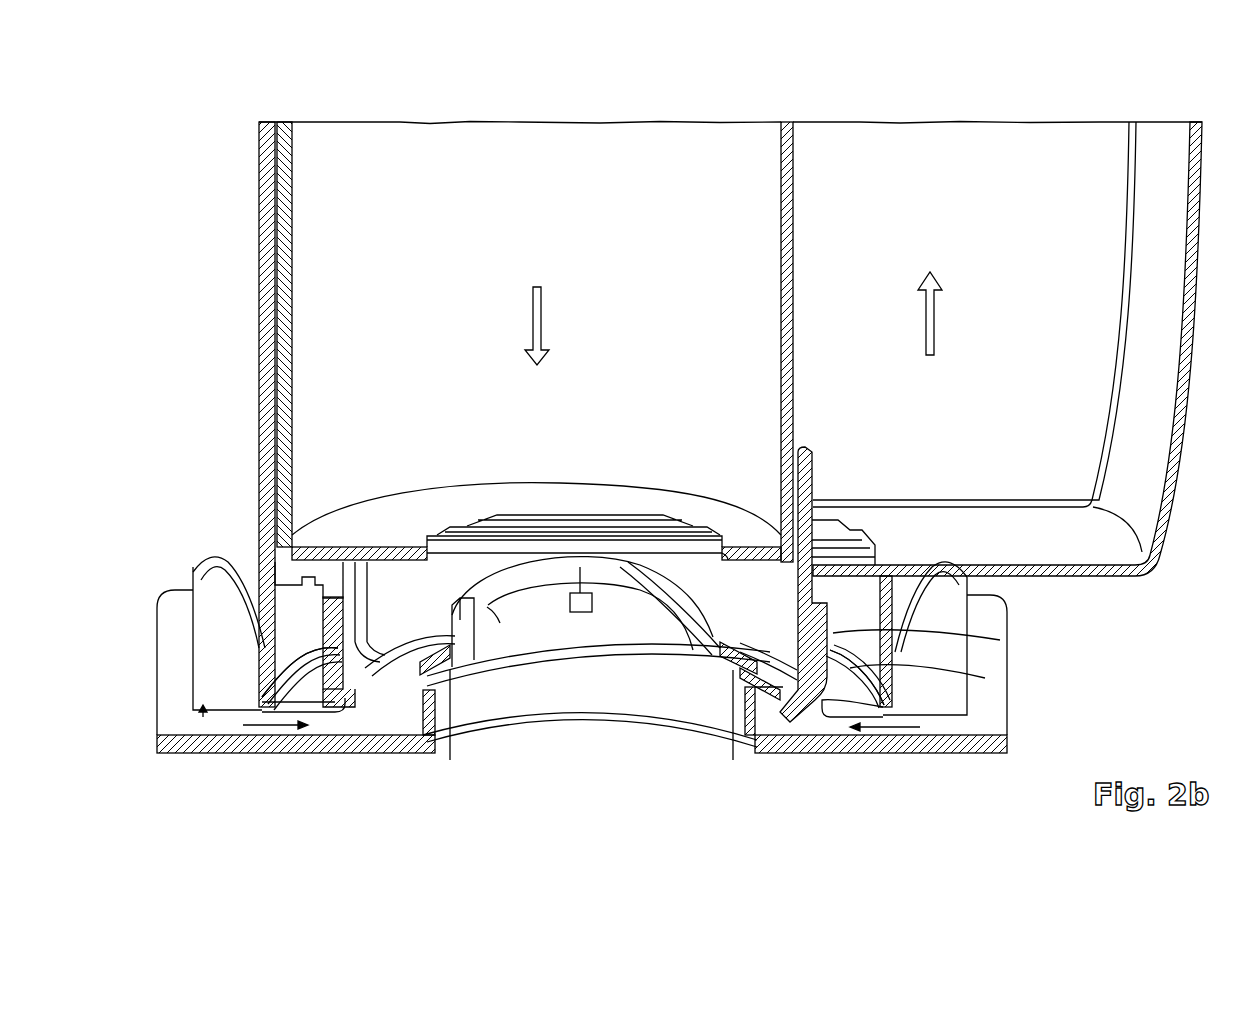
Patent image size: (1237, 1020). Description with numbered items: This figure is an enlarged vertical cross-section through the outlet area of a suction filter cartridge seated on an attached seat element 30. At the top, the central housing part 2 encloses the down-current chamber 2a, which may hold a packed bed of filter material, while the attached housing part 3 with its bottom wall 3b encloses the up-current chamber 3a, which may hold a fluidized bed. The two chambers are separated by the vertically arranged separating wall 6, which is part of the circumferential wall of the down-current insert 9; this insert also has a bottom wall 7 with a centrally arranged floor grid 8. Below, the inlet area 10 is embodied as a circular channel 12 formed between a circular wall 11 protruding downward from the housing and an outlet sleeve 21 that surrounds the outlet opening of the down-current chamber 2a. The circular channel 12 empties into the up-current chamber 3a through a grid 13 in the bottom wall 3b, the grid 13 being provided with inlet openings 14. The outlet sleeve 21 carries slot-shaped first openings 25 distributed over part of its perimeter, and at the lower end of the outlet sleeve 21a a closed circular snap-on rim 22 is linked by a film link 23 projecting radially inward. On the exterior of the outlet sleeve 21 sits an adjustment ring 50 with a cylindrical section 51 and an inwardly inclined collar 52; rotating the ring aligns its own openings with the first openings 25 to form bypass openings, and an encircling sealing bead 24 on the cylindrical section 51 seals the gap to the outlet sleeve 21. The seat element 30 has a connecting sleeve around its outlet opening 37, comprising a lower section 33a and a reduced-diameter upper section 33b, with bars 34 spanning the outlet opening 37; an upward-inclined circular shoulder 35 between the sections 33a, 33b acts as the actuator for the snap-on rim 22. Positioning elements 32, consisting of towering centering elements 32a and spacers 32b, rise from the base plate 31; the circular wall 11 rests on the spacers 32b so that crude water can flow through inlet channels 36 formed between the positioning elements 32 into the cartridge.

The central housing part 2 is at (265, 213).
The down-current chamber 2a is at (549, 209).
The attached housing part 3 is at (1170, 490).
The up-current chamber 3a is at (998, 412).
The bottom wall 3b is at (1080, 575).
The separating wall 6 is at (793, 300).
The bottom wall 7 is at (395, 510).
The floor grid 8 is at (585, 532).
The down-current insert 9 is at (275, 318).
The inlet area 10 is at (288, 588).
The circular wall 11 is at (985, 677).
The circular channel 12 is at (272, 592).
The grid 13 is at (843, 538).
The inlet openings 14 is at (860, 522).
The outlet sleeve 21 is at (828, 505).
The lower end of the outlet sleeve 21a is at (295, 555).
The snap-on rim 22 is at (437, 688).
The film link 23 is at (793, 690).
The sealing bead 24 is at (345, 700).
The first openings 25 is at (370, 695).
The seat element 30 is at (1010, 725).
The base plate 31 is at (972, 737).
The positioning elements 32 is at (203, 710).
The centering elements 32a is at (213, 598).
The spacers 32b is at (325, 714).
The lower section 33a is at (735, 680).
The upper section 33b is at (673, 647).
The bars 34 is at (513, 593).
The circular shoulder 35 is at (710, 670).
The inlet channels 36 is at (266, 727).
The outlet opening 37 is at (601, 765).
The adjustment ring 50 is at (842, 598).
The cylindrical section 51 is at (990, 640).
The collar 52 is at (807, 700).